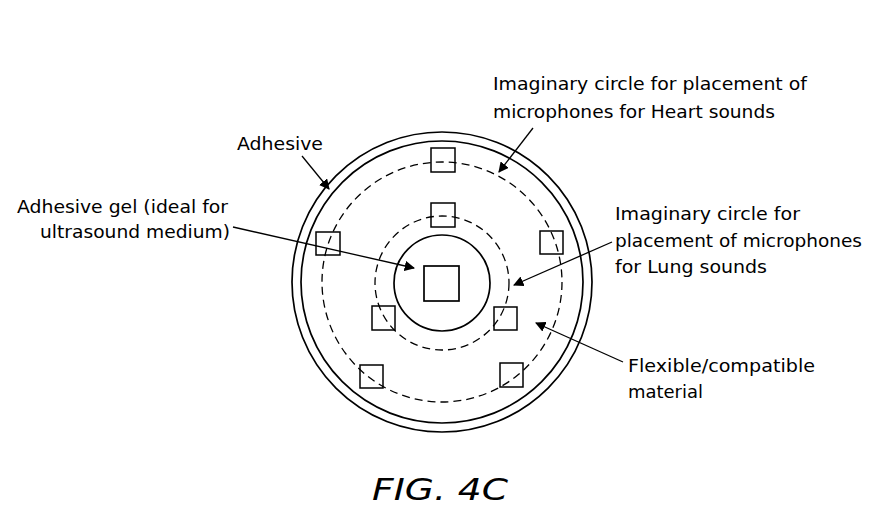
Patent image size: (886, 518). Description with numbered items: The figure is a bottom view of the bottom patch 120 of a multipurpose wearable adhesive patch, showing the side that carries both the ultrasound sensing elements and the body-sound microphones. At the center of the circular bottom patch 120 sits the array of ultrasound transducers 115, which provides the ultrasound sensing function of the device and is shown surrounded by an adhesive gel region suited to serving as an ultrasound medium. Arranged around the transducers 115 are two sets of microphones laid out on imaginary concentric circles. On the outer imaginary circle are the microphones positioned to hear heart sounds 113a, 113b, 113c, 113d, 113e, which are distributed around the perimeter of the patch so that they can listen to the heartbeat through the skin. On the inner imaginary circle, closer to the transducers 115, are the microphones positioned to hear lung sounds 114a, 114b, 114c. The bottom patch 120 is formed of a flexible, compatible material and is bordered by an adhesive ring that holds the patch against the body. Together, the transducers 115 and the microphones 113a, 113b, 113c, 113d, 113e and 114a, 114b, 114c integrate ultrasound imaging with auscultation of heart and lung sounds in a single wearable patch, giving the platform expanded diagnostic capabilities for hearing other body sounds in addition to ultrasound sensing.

The bottom patch 120 is at (378, 100).
The ultrasound transducers 115 is at (439, 287).
The microphone positioned to hear heart sounds 113a is at (372, 322).
The microphone positioned to hear heart sounds 113b is at (510, 376).
The microphone positioned to hear heart sounds 113c is at (548, 238).
The microphone positioned to hear heart sounds 113d is at (443, 152).
The microphone positioned to hear heart sounds 113e is at (322, 236).
The microphone positioned to hear lung sounds 114a is at (362, 377).
The microphone positioned to hear lung sounds 114b is at (508, 318).
The microphone positioned to hear lung sounds 114c is at (438, 207).